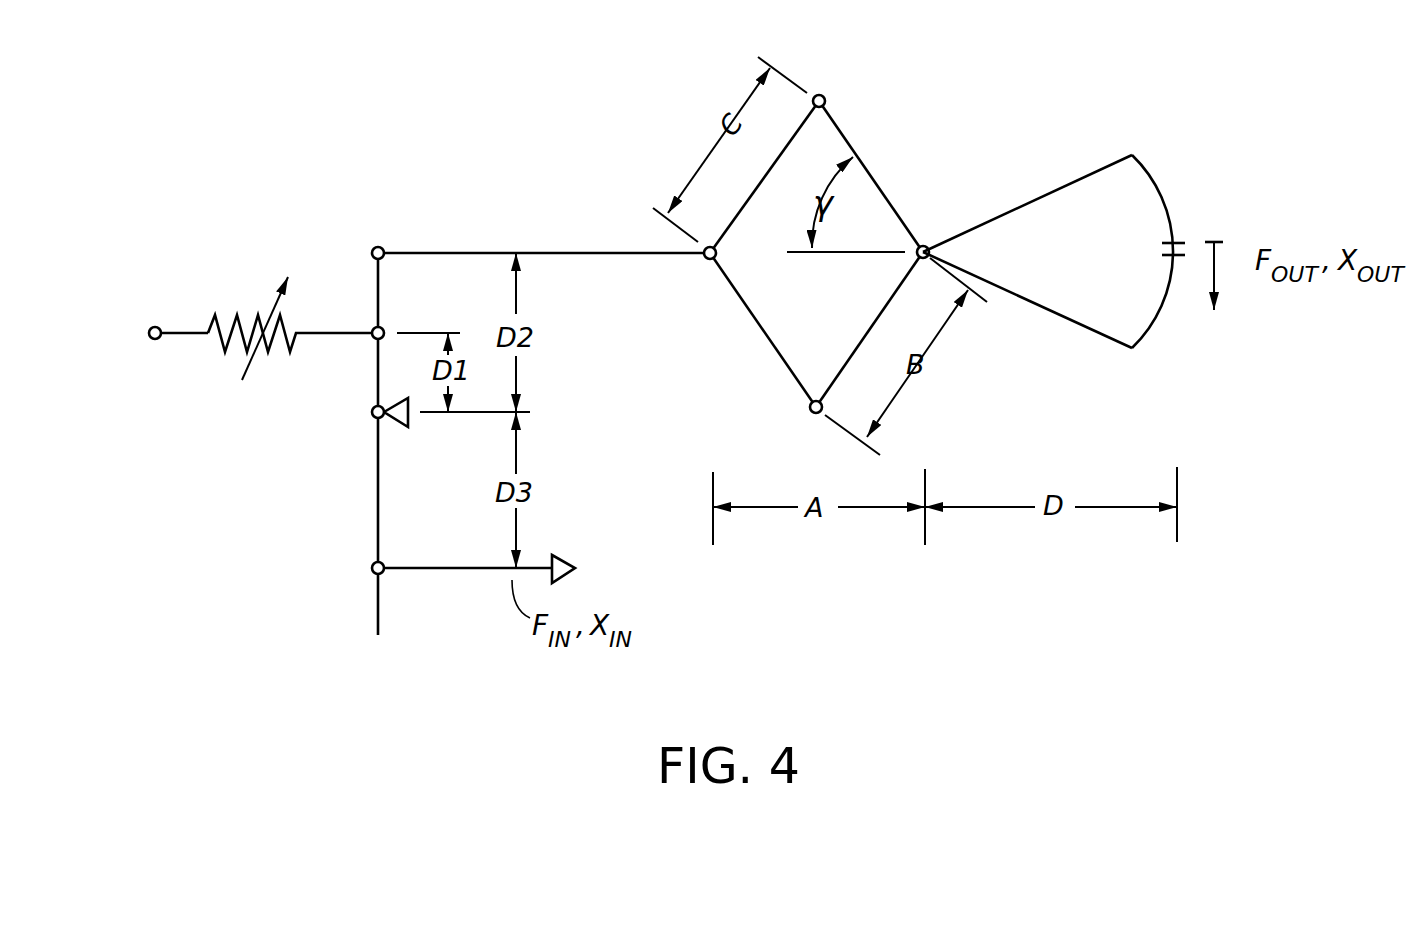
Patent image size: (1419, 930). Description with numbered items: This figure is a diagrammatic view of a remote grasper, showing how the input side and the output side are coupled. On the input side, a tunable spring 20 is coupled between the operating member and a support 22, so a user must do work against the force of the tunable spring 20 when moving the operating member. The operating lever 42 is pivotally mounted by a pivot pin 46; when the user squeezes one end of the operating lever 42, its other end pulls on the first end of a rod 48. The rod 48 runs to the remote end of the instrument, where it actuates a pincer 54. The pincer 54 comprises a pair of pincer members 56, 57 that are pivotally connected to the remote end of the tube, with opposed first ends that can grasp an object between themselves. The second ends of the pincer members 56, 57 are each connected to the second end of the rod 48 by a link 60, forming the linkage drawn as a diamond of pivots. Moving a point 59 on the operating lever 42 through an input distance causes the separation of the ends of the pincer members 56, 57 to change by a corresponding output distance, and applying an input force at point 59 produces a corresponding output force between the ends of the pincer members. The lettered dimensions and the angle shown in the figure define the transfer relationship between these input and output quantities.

The tunable spring 20 is at (243, 310).
The support 22 is at (153, 326).
The operating lever 42 is at (380, 605).
The pivot pin 46 is at (372, 412).
The rod 48 is at (514, 243).
The pincer 54 is at (858, 206).
The pincer member 56 is at (1048, 313).
The pincer member 57 is at (1048, 192).
The point on operating lever 59 is at (373, 568).
The link 60 is at (765, 338).